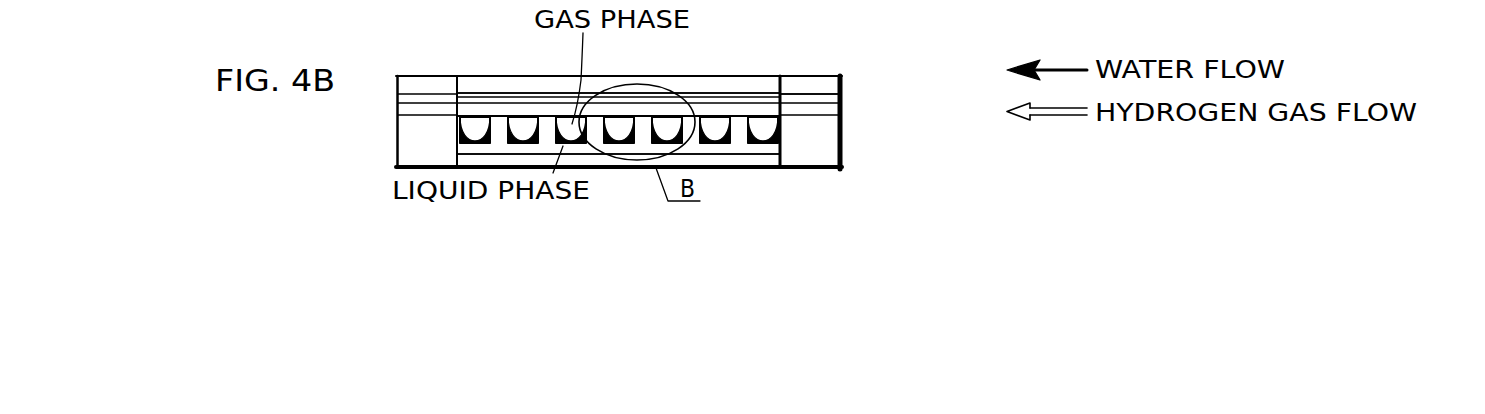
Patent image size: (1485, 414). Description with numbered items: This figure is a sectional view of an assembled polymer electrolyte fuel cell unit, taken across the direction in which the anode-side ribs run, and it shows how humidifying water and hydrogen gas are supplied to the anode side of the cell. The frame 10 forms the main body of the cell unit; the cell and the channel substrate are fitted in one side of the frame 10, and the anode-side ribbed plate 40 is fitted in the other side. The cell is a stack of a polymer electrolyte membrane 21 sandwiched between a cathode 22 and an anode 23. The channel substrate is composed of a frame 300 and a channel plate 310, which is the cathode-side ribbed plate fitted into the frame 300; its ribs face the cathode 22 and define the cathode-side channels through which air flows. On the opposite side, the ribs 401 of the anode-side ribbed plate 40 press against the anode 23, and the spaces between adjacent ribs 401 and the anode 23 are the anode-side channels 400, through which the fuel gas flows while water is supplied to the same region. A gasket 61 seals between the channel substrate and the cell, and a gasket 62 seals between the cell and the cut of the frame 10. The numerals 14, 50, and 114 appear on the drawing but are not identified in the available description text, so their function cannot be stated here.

The frame 10 is at (407, 142).
The gas passage 14 is at (724, 6).
The polymer electrolyte membrane 21 is at (503, 100).
The cathode 22 is at (480, 94).
The anode 23 is at (518, 115).
The anode-side ribbed plate 40 is at (634, 150).
The water passage plate 50 is at (766, 163).
The gasket 61 is at (828, 98).
The gasket 62 is at (828, 113).
The water passage 114 is at (635, 6).
The frame 300 is at (800, 85).
The channel plate 310 is at (722, 84).
The anode-side channels 400 is at (619, 120).
The ribs 401 is at (662, 120).